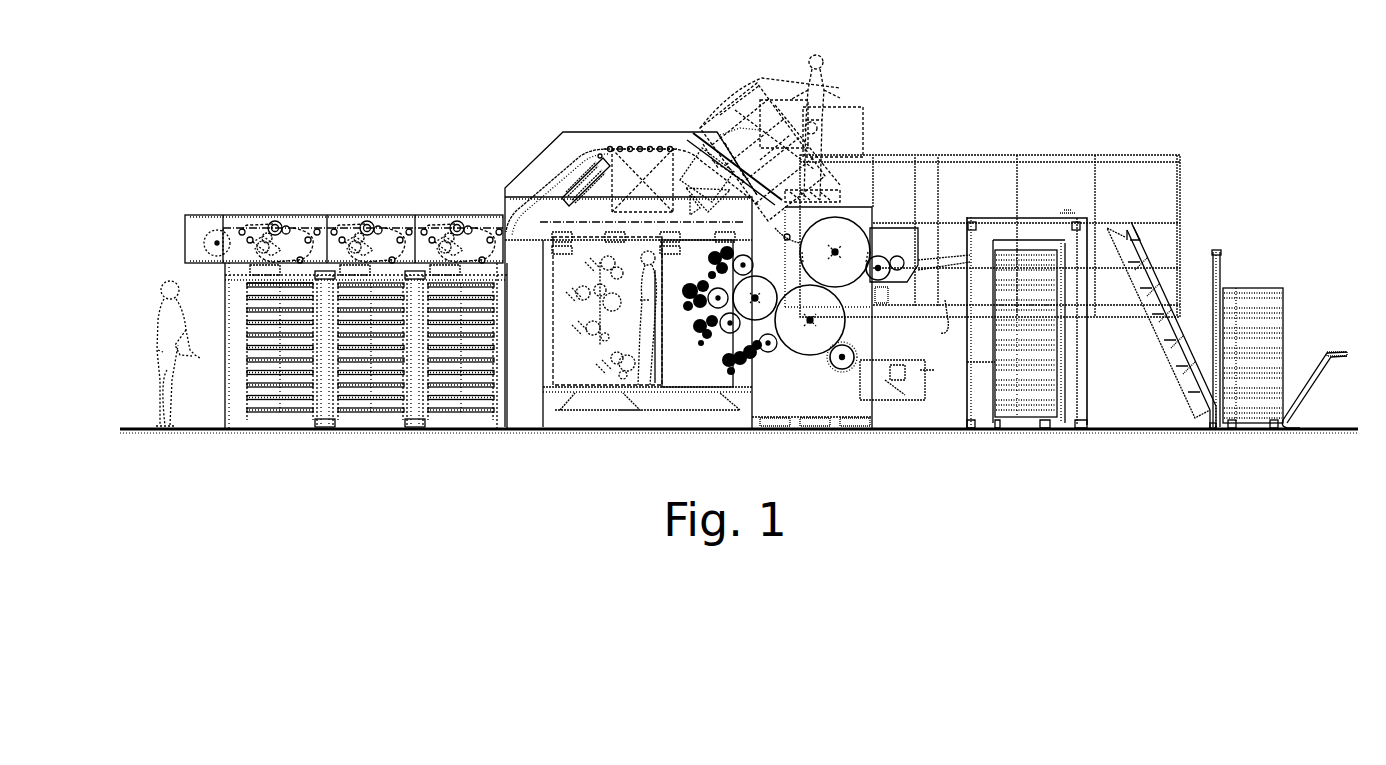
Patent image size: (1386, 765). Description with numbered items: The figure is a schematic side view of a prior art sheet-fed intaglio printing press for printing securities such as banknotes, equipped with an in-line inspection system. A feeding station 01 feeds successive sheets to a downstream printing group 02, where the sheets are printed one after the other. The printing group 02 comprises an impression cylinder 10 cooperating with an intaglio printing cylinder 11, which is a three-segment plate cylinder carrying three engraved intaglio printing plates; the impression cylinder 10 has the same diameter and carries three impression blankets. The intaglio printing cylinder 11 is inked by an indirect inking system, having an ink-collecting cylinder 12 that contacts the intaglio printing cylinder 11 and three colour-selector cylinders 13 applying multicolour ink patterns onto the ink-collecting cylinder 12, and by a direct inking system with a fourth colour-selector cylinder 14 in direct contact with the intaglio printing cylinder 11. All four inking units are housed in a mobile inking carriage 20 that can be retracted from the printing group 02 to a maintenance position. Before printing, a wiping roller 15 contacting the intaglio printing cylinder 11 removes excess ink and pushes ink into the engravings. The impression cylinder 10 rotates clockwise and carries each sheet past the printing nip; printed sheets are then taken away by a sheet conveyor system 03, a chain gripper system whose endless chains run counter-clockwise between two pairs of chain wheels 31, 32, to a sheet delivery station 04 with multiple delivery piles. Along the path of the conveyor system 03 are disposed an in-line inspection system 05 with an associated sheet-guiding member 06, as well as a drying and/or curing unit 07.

The feeding station 01 is at (1067, 194).
The printing group 02 is at (880, 204).
The sheet conveyor system 03 is at (629, 146).
The sheet delivery station 04 is at (355, 212).
The in-line inspection system 05 is at (681, 148).
The sheet-guiding member 06 is at (713, 138).
The drying and/or curing unit 07 is at (574, 170).
The impression cylinder 10 is at (835, 228).
The intaglio printing cylinder 11 is at (808, 340).
The ink-collecting cylinder 12 is at (748, 356).
The colour-selector cylinders 13 is at (722, 336).
The fourth colour-selector cylinder 14 is at (771, 352).
The wiping roller 15 is at (844, 369).
The mobile inking carriage 20 is at (676, 368).
The chain wheels 31 is at (788, 237).
The chain wheels 32 is at (214, 242).